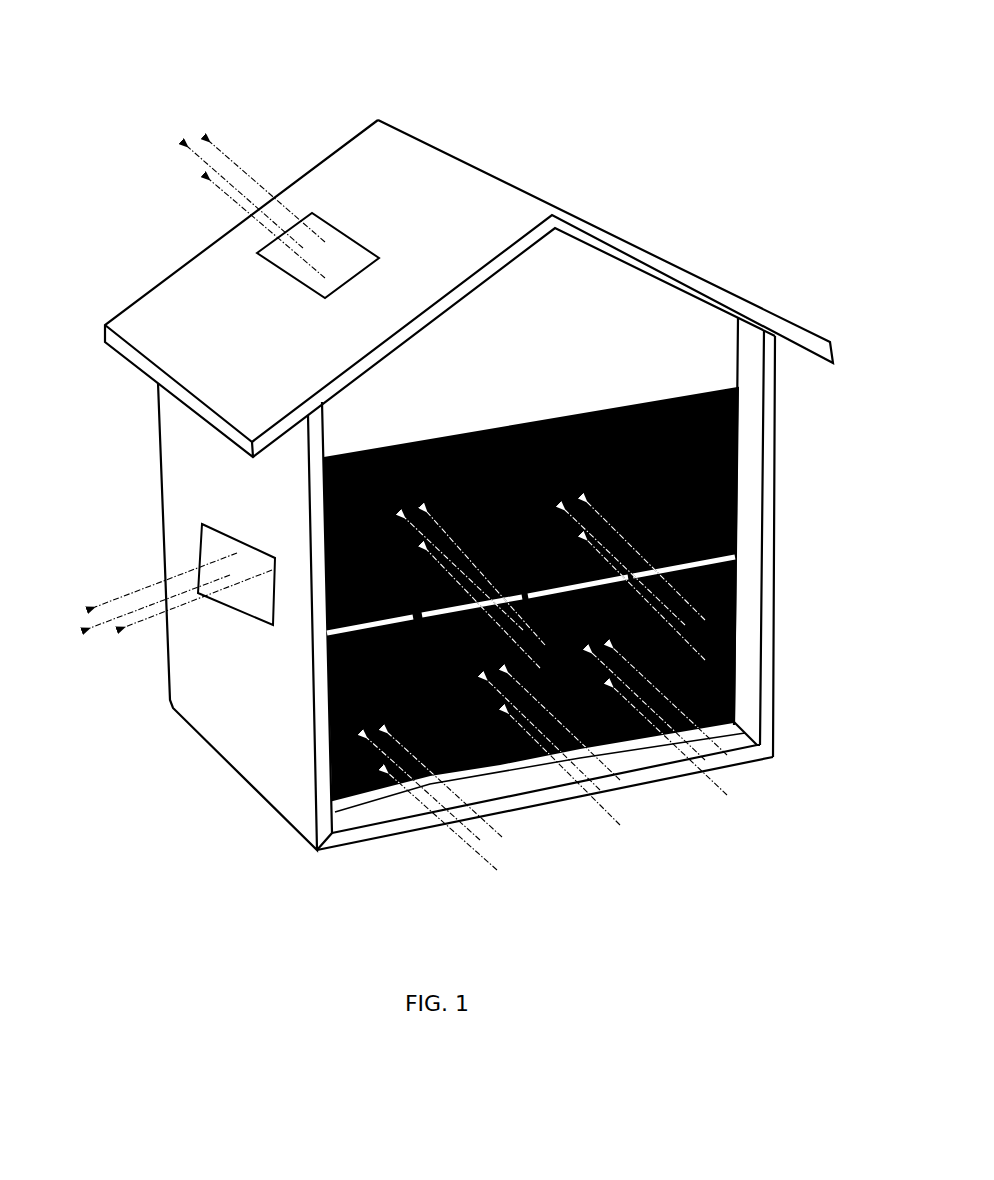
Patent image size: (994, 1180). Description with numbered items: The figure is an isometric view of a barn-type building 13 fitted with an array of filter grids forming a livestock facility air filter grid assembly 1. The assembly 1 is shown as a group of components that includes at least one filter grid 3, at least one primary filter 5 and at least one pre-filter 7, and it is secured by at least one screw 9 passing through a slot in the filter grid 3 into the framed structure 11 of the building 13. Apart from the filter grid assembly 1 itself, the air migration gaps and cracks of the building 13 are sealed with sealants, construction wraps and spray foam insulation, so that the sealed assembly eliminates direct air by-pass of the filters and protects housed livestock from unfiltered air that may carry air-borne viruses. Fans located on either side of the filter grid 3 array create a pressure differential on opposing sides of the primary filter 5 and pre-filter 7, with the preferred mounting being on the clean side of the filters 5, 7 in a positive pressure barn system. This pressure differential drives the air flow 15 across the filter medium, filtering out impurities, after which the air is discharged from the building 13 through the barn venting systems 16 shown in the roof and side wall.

The air filter grid assembly 1 is at (128, 66).
The filter grid 3 is at (738, 499).
The primary filter 5 is at (619, 594).
The pre-filter 7 is at (737, 594).
The screw 9 is at (737, 642).
The framed structure 11 is at (330, 632).
The building 13 is at (216, 509).
The air flow 15 is at (547, 686).
The barn venting systems 16 is at (193, 385).